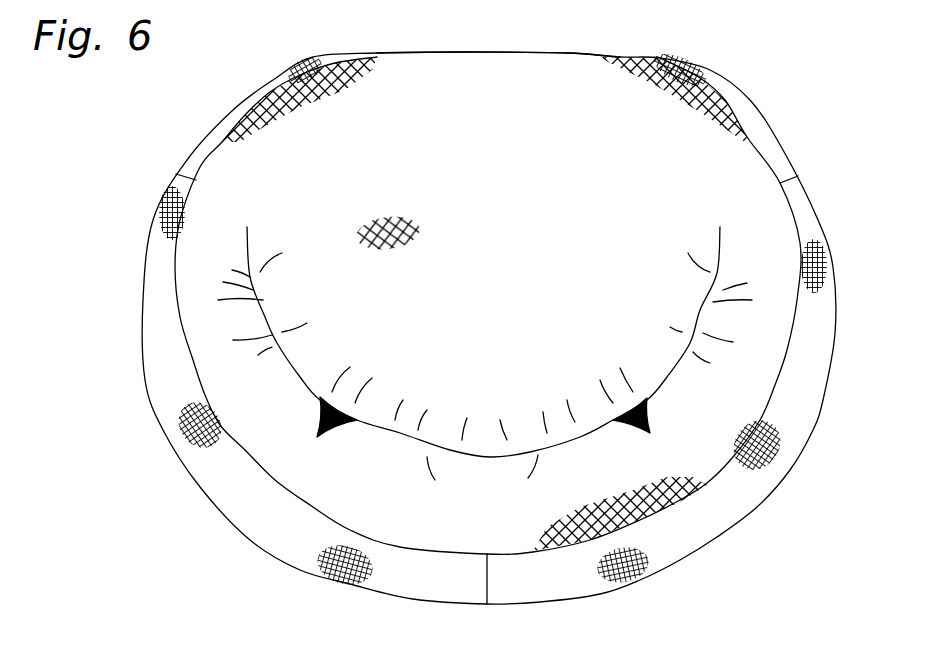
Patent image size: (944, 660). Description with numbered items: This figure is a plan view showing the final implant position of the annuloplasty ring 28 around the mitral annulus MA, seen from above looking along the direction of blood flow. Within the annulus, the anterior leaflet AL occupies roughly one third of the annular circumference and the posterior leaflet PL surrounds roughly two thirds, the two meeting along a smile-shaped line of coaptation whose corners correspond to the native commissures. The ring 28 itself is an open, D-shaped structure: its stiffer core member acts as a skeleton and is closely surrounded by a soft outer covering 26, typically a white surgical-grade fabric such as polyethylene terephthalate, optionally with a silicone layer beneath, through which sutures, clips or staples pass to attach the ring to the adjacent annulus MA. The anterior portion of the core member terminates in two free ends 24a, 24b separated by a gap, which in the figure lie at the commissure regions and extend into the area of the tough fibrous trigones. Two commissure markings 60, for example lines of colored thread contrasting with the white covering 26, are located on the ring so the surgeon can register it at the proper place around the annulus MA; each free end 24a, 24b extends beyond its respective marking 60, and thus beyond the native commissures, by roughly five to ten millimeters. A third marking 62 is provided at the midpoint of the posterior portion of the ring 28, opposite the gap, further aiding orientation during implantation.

The free end 24a is at (308, 58).
The free end 24b is at (657, 59).
The mitral annulus MA is at (457, 50).
The outer covering 26 is at (189, 381).
The annuloplasty ring 28 is at (443, 325).
The commissure markings 60 is at (185, 177).
The third marking 62 is at (487, 603).
The anterior leaflet AL is at (485, 342).
The posterior leaflet PL is at (482, 486).